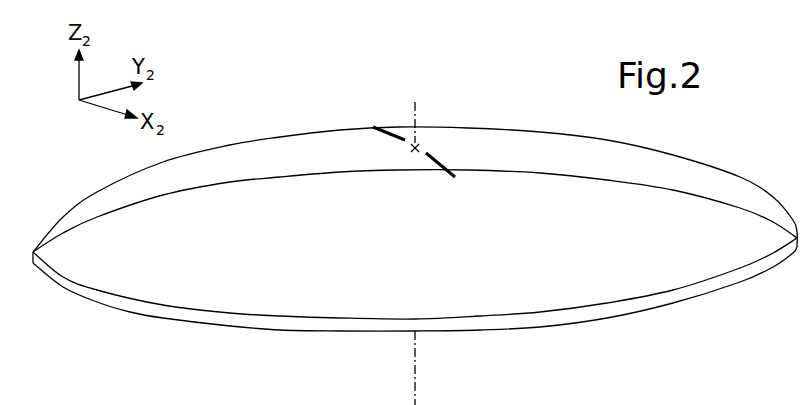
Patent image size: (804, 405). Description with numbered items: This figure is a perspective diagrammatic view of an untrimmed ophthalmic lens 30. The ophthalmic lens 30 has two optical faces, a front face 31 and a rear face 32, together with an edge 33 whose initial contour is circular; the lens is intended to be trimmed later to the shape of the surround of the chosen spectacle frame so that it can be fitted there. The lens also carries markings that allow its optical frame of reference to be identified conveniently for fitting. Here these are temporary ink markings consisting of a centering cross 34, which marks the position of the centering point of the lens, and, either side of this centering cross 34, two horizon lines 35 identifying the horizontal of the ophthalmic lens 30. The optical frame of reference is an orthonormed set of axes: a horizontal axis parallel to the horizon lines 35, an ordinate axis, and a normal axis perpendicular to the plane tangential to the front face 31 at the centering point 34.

The ophthalmic lens 30 is at (415, 237).
The front optical face 31 is at (289, 147).
The rear optical face 32 is at (328, 331).
The edge 33 is at (550, 318).
The centering cross 34 is at (416, 148).
The horizon lines 35 is at (437, 156).